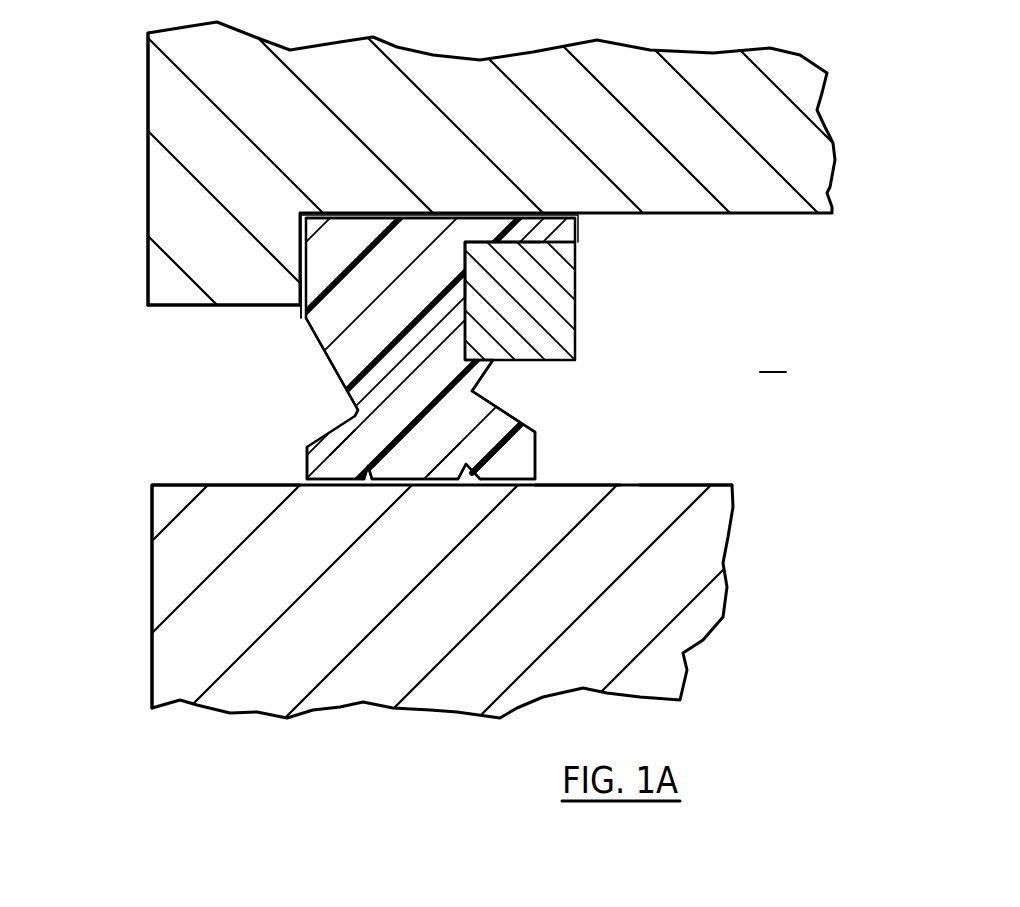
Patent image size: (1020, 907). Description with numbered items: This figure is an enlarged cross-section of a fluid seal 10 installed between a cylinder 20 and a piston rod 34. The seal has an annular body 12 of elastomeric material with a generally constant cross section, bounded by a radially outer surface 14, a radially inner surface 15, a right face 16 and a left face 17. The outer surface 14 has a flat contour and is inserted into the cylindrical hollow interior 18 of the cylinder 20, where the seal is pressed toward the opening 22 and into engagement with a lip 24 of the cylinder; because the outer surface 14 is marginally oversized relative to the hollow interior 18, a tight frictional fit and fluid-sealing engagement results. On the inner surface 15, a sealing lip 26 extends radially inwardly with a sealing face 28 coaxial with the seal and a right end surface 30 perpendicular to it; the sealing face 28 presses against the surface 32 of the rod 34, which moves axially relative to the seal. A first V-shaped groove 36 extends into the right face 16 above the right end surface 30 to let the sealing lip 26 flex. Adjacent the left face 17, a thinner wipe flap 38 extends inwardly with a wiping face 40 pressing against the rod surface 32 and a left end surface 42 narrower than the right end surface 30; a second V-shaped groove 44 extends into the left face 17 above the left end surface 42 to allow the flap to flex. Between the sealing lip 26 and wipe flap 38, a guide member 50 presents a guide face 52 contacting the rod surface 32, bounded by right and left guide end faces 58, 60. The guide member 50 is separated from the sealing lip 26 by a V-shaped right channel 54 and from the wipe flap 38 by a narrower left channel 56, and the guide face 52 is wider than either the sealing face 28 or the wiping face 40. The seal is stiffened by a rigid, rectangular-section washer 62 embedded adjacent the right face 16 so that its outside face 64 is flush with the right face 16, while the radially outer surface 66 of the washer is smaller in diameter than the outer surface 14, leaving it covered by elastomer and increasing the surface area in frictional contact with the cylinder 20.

The fluid seal 10 is at (181, 395).
The annular body 12 is at (598, 420).
The radially outer surface 14 is at (370, 213).
The radially inner surface 15 is at (560, 474).
The right face 16 is at (584, 236).
The left face 17 is at (294, 318).
The cylindrical hollow interior 18 is at (773, 358).
The cylinder 20 is at (821, 137).
The opening 22 is at (110, 484).
The lip 24 is at (164, 203).
The sealing lip 26 is at (525, 474).
The sealing face 28 is at (528, 480).
The right end surface 30 is at (540, 455).
The surface 32 is at (687, 482).
The piston rod 34 is at (710, 555).
The first V-shaped groove 36 is at (480, 395).
The wipe flap 38 is at (316, 483).
The wiping face 40 is at (327, 483).
The left end surface 42 is at (307, 460).
The second V-shaped groove 44 is at (338, 418).
The guide member 50 is at (427, 455).
The guide face 52 is at (408, 476).
The right channel 54 is at (466, 466).
The left channel 56 is at (368, 468).
The right guide end face 58 is at (480, 470).
The left guide end face 60 is at (374, 470).
The washer 62 is at (577, 338).
The outside face 64 is at (577, 287).
The radially outer surface of washer 66 is at (537, 241).